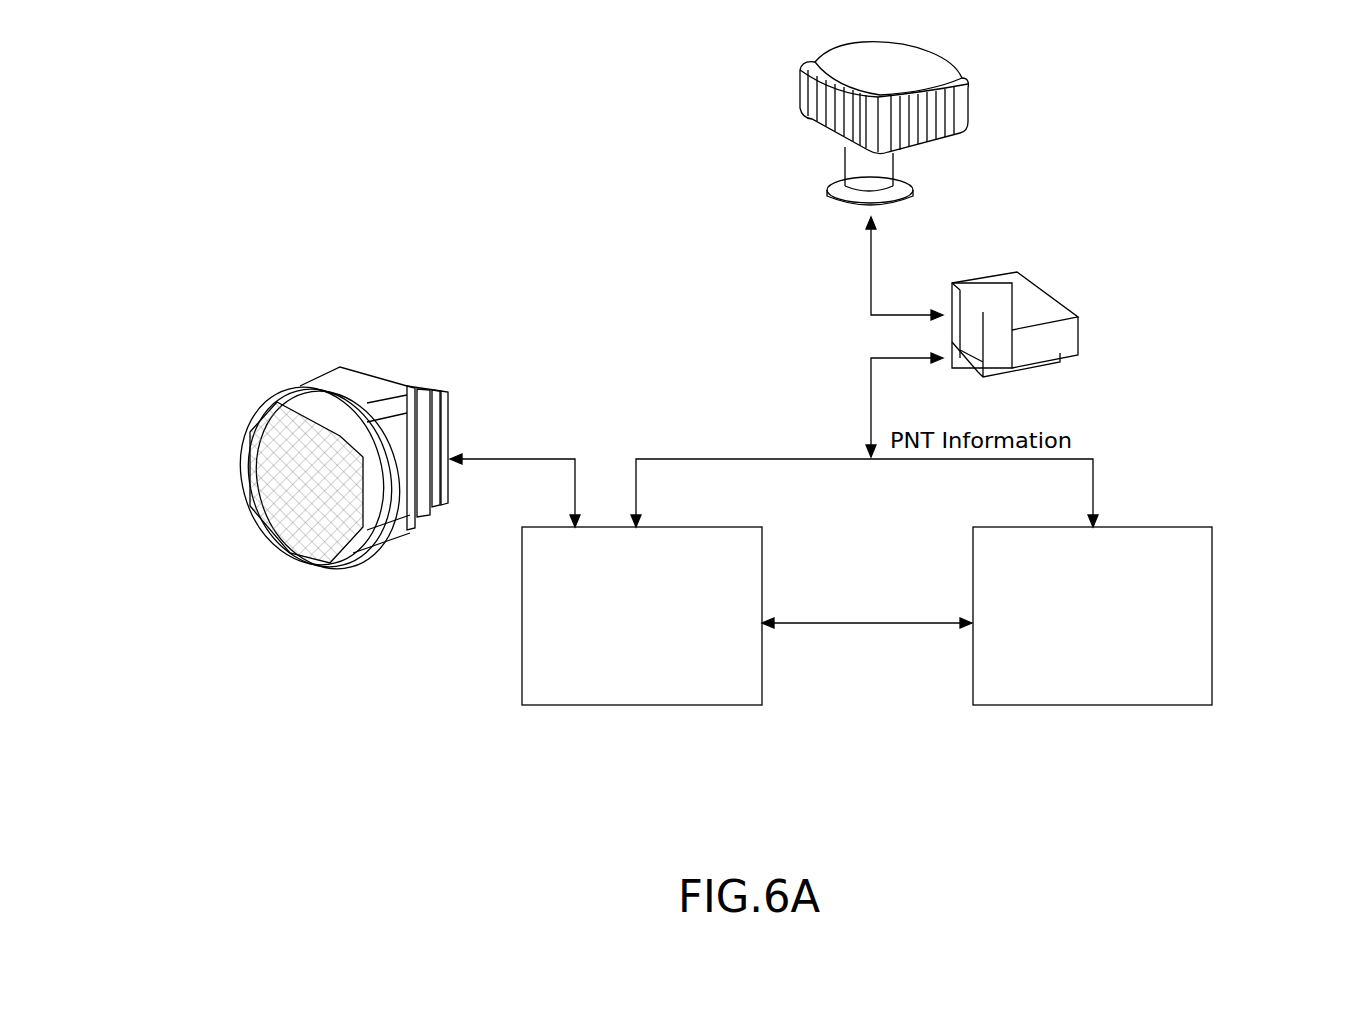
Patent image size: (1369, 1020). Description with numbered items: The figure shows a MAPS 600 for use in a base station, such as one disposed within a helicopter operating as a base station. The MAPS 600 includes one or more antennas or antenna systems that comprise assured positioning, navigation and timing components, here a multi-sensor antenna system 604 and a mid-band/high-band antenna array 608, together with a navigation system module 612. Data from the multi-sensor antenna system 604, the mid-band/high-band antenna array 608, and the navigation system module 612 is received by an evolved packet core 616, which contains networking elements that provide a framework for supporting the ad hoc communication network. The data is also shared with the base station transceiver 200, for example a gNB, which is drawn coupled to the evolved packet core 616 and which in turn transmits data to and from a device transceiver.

The MAPS 600 is at (415, 96).
The multi-sensor antenna system 604 is at (935, 72).
The navigation system module 612 is at (1069, 335).
The mid-band/high-band antenna array 608 is at (268, 472).
The base station transceiver 200 is at (522, 625).
The evolved packet core 616 is at (1212, 626).